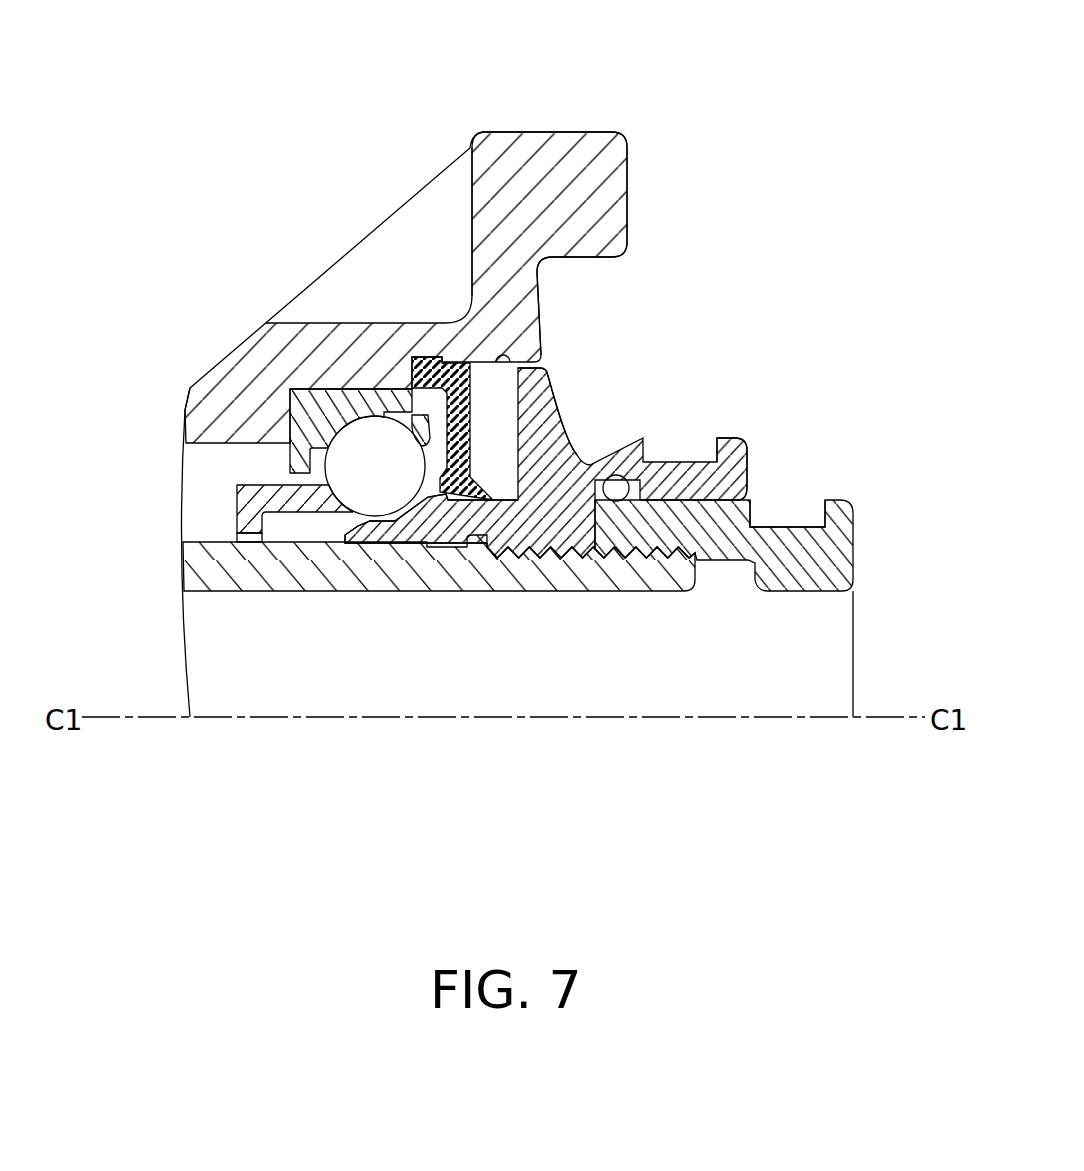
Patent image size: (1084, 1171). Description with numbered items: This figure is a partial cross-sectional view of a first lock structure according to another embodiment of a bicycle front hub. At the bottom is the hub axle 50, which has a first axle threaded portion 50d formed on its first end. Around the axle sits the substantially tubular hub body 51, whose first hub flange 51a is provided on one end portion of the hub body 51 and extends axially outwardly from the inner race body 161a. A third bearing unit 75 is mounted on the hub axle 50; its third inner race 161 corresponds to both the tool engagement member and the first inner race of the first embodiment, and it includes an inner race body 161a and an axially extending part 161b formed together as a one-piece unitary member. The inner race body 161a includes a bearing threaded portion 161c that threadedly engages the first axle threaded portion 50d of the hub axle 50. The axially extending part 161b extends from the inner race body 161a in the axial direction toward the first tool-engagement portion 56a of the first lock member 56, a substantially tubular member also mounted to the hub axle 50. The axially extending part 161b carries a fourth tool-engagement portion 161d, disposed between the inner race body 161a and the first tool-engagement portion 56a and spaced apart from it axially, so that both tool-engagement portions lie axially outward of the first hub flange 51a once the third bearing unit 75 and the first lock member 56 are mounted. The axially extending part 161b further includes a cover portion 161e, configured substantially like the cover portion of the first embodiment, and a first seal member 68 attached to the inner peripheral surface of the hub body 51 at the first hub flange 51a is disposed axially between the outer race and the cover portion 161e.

The hub axle 50 is at (230, 612).
The first axle threaded portion 50d is at (563, 550).
The hub body 51 is at (223, 321).
The first hub flange 51a is at (535, 148).
The first lock member 56 is at (820, 606).
The first tool-engagement portion 56a is at (790, 508).
The first seal member 68 is at (437, 380).
The third bearing unit 75 is at (243, 467).
The third inner race 161 is at (412, 550).
The inner race body 161a is at (452, 535).
The axially extending part 161b is at (665, 490).
The bearing threaded portion 161c is at (540, 555).
The fourth tool-engagement portion 161d is at (663, 457).
The cover portion 161e is at (545, 393).